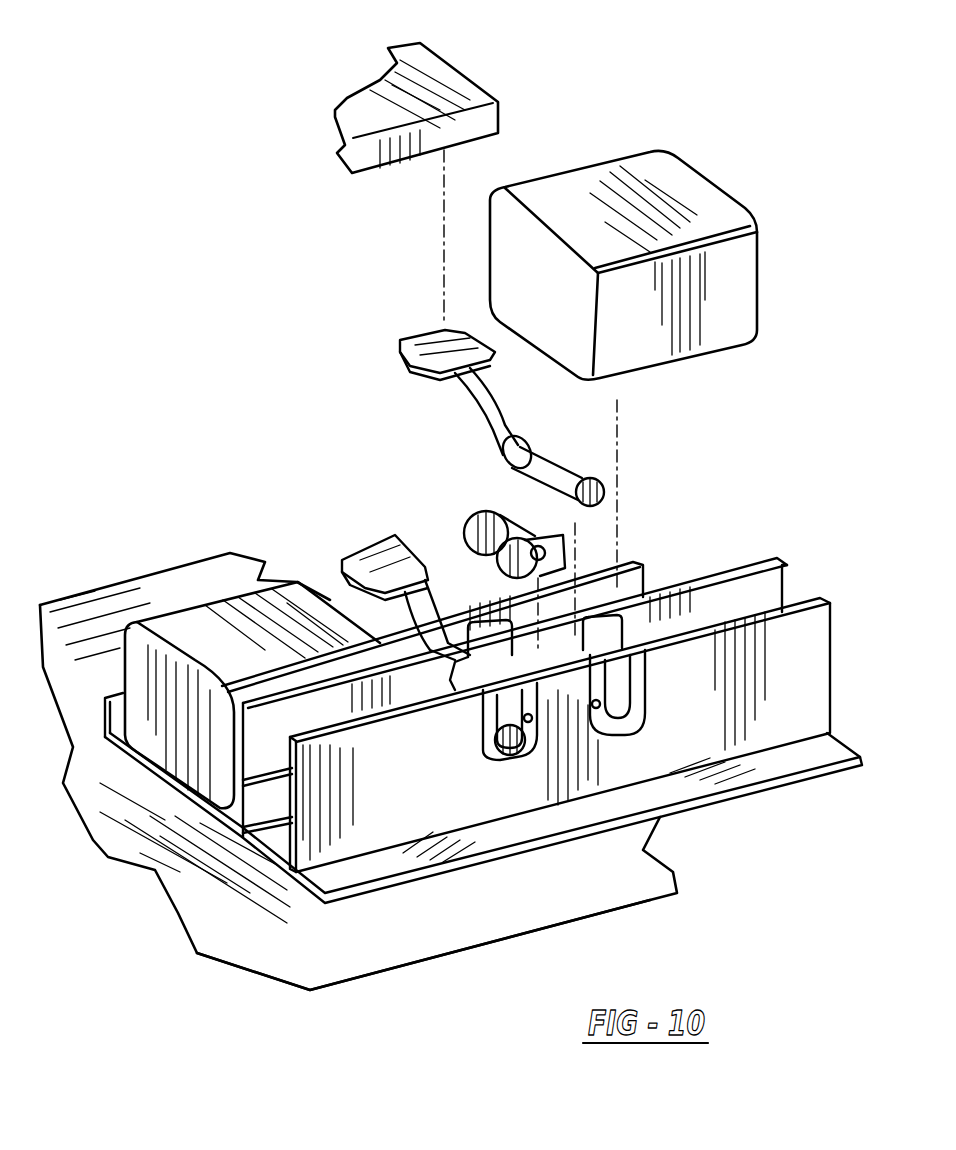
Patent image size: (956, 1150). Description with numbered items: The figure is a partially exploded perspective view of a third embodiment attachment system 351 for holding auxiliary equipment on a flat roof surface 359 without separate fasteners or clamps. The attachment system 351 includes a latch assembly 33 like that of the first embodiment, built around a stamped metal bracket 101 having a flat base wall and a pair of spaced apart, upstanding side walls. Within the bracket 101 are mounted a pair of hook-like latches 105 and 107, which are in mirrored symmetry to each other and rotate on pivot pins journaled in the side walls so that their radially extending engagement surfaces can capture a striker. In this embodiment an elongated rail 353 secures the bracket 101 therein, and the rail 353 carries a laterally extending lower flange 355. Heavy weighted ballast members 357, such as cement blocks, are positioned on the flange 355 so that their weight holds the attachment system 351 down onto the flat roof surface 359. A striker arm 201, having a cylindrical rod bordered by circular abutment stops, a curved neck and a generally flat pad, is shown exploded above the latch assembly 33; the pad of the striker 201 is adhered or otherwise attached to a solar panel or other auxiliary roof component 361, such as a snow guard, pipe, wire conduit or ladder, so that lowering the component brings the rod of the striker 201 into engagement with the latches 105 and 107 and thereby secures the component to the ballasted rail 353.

The latch assembly 33 is at (607, 637).
The bracket 101 is at (443, 680).
The latch 105 is at (468, 527).
The latch 107 is at (485, 652).
The striker arm 201 is at (463, 387).
The attachment system 351 is at (800, 540).
The rail 353 is at (768, 713).
The lower flange 355 is at (153, 750).
The ballast member 357 is at (722, 290).
The flat roof surface 359 is at (285, 943).
The auxiliary roof component 361 is at (455, 85).